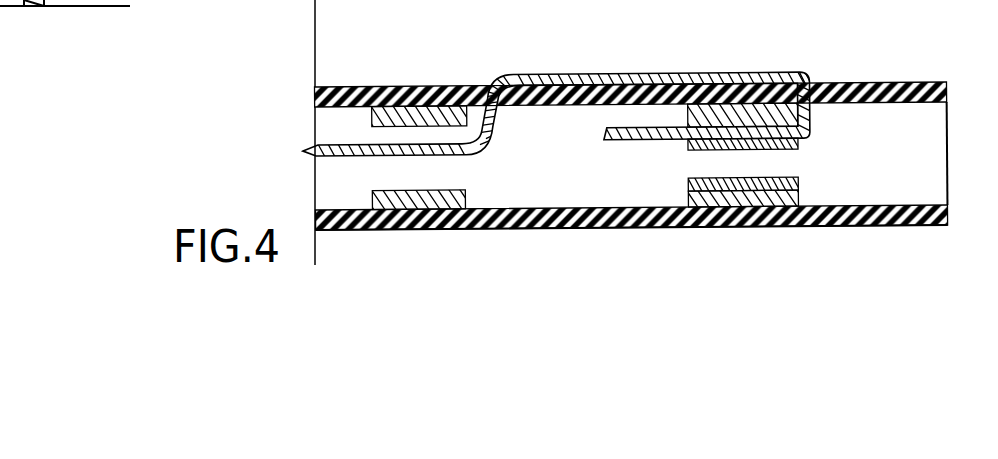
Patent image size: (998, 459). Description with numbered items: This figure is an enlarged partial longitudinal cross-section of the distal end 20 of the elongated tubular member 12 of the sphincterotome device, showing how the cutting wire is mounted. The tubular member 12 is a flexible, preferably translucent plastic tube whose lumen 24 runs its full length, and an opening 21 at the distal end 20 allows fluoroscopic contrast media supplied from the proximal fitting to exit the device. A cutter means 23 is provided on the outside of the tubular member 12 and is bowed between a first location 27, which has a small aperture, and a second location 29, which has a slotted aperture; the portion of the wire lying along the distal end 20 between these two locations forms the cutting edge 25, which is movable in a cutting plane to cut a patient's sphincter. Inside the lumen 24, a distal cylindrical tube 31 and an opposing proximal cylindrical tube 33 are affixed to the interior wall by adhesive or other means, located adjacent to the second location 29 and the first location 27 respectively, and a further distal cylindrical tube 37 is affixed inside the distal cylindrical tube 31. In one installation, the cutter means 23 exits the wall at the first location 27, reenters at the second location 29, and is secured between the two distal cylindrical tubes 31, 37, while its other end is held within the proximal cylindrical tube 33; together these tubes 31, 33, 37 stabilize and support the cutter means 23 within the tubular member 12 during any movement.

The tubular member 12 is at (597, 233).
The distal end 20 is at (727, 235).
The opening 21 is at (913, 215).
The cutter means 23 is at (587, 83).
The lumen 24 is at (553, 168).
The cutting edge 25 is at (539, 76).
The first location 27 is at (477, 87).
The second location 29 is at (815, 85).
The distal cylindrical tube 31 is at (687, 121).
The proximal cylindrical tube 33 is at (380, 118).
The distal cylindrical tube 37 is at (796, 146).